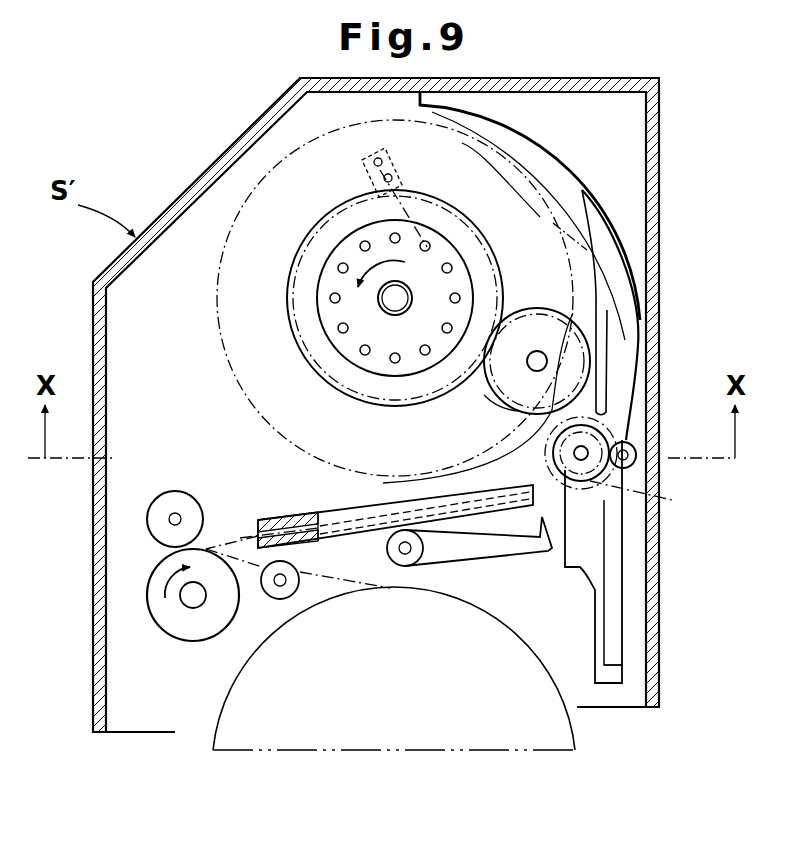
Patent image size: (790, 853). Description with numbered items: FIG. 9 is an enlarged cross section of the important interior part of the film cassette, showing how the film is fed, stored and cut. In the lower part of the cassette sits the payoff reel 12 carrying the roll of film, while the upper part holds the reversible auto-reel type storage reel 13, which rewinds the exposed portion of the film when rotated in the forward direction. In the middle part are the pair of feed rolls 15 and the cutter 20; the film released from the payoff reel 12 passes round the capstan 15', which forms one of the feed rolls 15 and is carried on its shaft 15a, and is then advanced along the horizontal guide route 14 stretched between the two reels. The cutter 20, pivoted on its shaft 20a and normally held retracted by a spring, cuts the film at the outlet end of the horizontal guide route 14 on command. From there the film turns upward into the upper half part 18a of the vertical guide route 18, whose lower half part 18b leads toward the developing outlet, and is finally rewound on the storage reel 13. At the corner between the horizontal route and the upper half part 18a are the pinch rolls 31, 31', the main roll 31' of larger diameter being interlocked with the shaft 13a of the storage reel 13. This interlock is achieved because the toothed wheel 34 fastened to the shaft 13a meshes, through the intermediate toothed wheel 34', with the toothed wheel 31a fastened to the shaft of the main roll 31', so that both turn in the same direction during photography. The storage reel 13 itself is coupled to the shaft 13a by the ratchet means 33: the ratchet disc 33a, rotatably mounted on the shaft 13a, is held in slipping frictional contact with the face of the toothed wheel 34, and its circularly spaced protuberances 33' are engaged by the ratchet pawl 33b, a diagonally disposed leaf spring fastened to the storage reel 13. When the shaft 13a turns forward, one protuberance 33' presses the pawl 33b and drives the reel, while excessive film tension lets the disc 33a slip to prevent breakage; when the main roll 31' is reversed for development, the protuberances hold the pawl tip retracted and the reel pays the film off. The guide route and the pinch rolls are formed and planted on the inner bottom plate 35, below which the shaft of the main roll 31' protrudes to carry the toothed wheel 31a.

The payoff reel 12 is at (277, 744).
The storage reel 13 is at (214, 300).
The shaft of the storage reel 13a is at (388, 305).
The horizontal guide route 14 is at (290, 522).
The feed rolls 15 is at (182, 489).
The capstan 15' is at (193, 624).
The shaft of the capstan 15a is at (185, 600).
The vertical guide route 18 is at (607, 522).
The upper half part of the vertical guide route 18a is at (612, 282).
The lower half part of the vertical guide route 18b is at (613, 652).
The cutter 20 is at (548, 560).
The shaft of the cutter 20a is at (410, 560).
The pinch roll 31 is at (629, 450).
The main roll 31' is at (654, 497).
The toothed wheel 31a is at (512, 457).
The ratchet means 33 is at (463, 249).
The protuberances 33' is at (518, 274).
The ratchet disc 33a is at (447, 247).
The ratchet pawl 33b is at (403, 181).
The toothed wheel 34 is at (537, 335).
The intermediate toothed wheel 34' is at (481, 412).
The inner bottom plate 35 is at (618, 702).